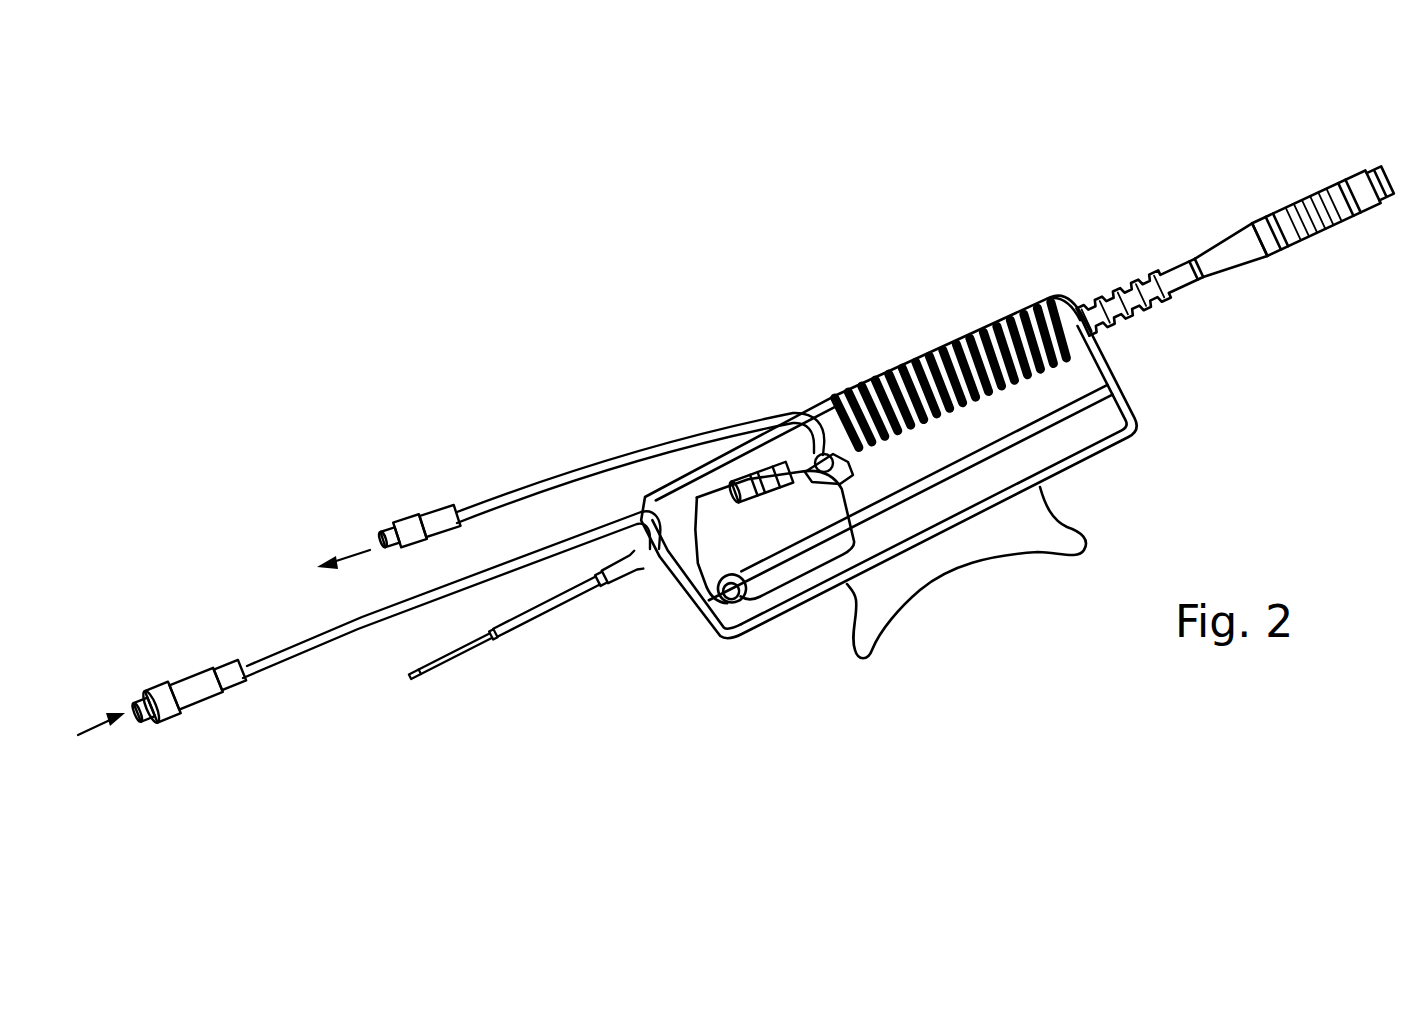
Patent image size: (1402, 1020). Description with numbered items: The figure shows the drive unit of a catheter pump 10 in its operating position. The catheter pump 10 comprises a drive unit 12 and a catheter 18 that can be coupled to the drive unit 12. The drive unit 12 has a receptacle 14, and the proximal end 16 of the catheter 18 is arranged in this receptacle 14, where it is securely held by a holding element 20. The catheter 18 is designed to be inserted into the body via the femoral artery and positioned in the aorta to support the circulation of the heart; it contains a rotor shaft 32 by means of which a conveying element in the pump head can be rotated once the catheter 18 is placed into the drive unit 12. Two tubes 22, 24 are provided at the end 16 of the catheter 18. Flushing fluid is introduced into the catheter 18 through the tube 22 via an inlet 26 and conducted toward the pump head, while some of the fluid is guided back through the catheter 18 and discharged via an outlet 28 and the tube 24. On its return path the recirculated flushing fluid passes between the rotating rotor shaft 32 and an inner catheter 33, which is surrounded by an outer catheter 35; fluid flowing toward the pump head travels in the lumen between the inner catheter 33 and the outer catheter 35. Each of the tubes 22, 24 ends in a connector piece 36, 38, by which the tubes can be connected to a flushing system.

The catheter pump 10 is at (853, 264).
The drive unit 12 is at (1077, 437).
The receptacle 14 is at (790, 467).
The proximal end 16 is at (757, 473).
The catheter 18 is at (521, 658).
The holding element 20 is at (767, 537).
The tube 22 is at (287, 652).
The tube 24 is at (607, 460).
The inlet 26 is at (653, 600).
The outlet 28 is at (843, 450).
The rotor shaft 32 is at (420, 680).
The inner catheter 33 is at (450, 663).
The outer catheter 35 is at (562, 600).
The connector piece 36 is at (165, 700).
The connector piece 38 is at (412, 528).